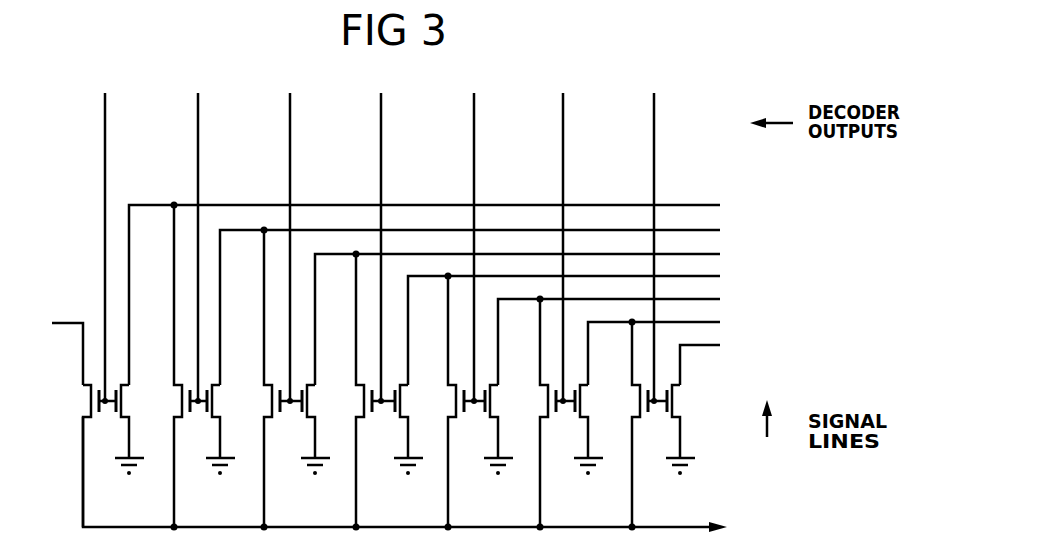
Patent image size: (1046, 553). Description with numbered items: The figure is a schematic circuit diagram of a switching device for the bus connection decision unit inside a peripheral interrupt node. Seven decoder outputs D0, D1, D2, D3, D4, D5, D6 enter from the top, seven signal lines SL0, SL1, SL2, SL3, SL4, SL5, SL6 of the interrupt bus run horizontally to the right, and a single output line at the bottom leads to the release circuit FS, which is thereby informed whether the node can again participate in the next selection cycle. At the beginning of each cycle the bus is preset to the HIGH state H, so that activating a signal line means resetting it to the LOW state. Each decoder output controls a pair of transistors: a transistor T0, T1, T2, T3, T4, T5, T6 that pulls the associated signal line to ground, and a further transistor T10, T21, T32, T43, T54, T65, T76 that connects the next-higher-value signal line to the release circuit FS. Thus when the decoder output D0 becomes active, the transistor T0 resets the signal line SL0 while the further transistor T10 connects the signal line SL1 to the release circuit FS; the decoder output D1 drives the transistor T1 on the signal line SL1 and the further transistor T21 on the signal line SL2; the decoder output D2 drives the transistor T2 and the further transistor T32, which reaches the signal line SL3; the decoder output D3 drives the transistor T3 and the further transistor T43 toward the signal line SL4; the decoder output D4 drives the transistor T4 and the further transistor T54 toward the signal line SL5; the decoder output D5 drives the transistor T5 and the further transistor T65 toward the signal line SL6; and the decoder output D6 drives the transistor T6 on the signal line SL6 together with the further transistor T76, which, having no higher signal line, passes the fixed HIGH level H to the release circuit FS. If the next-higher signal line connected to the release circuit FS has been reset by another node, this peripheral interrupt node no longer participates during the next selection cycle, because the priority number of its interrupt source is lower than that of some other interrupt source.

The HIGH state H is at (64, 337).
The release circuit FS is at (425, 482).
The decoder output D0 is at (654, 231).
The signal line SL0 is at (722, 356).
The transistor T0 is at (683, 430).
The decoder output D1 is at (563, 231).
The signal line SL1 is at (676, 345).
The transistor T1 is at (591, 430).
The further transistor T10 is at (649, 424).
The decoder output D2 is at (474, 231).
The signal line SL2 is at (631, 333).
The transistor T2 is at (501, 430).
The further transistor T21 is at (557, 413).
The decoder output D3 is at (381, 231).
The signal line SL3 is at (586, 322).
The transistor T3 is at (411, 430).
The further transistor T32 is at (466, 401).
The decoder output D4 is at (290, 231).
The signal line SL4 is at (540, 311).
The transistor T4 is at (318, 430).
The further transistor T43 is at (375, 390).
The decoder output D5 is at (198, 231).
The signal line SL5 is at (492, 299).
The transistor T5 is at (223, 430).
The further transistor T54 is at (283, 378).
The decoder output D6 is at (105, 231).
The signal line SL6 is at (447, 286).
The transistor T6 is at (132, 430).
The further transistor T65 is at (191, 366).
The further transistor T76 is at (100, 456).